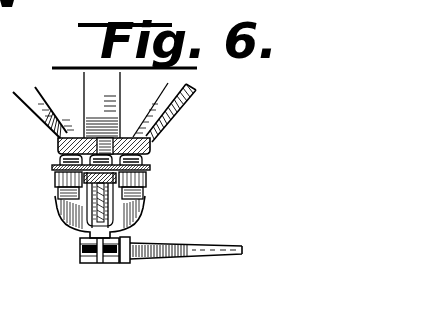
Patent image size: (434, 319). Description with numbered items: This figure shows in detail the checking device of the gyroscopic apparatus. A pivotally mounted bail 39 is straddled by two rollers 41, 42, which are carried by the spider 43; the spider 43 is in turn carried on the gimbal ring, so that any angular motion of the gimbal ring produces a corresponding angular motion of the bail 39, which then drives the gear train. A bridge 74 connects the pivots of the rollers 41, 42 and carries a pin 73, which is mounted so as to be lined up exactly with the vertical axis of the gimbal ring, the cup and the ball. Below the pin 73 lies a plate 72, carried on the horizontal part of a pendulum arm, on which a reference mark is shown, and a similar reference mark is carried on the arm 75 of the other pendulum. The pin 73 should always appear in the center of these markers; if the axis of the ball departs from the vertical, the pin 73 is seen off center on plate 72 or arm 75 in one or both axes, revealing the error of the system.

The bail 39 is at (78, 212).
The roller 41 is at (146, 181).
The roller 42 is at (60, 180).
The spider 43 is at (186, 106).
The plate 72 is at (85, 263).
The pin 73 is at (103, 258).
The bridge 74 is at (132, 214).
The arm 75 is at (198, 241).